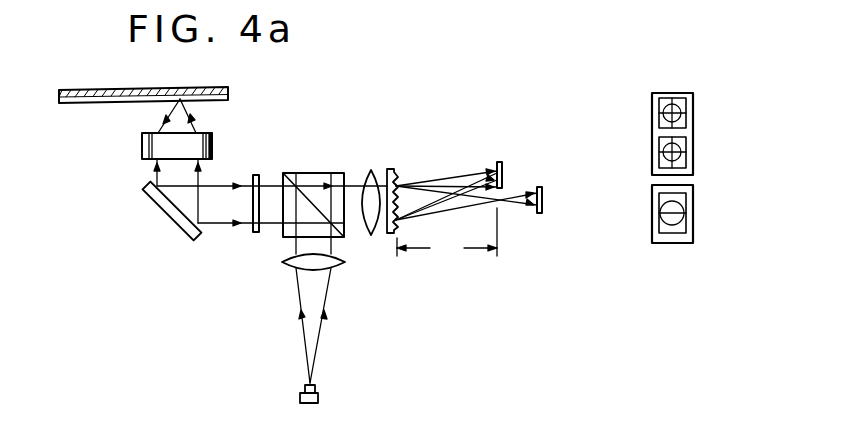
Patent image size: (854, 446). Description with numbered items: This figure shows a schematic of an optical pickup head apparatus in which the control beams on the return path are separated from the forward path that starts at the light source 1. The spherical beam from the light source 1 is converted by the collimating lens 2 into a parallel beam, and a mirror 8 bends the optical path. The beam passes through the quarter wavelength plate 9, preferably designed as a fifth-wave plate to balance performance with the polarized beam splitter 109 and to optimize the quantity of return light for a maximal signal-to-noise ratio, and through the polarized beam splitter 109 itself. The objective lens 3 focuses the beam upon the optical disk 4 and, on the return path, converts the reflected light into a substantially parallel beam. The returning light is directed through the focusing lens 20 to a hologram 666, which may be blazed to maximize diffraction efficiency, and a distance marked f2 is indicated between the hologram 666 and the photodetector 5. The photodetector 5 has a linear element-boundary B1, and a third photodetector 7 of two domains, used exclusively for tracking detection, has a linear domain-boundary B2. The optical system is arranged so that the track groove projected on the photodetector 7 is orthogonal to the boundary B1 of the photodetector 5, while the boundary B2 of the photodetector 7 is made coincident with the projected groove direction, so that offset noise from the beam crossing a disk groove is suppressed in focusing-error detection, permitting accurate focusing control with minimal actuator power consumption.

The light source 1 is at (318, 398).
The collimating lens 2 is at (335, 272).
The objective lens 3 is at (142, 148).
The optical storage medium 4 is at (218, 89).
The photodetector 5 is at (503, 165).
The third photodetector 7 is at (543, 199).
The mirror 8 is at (163, 209).
The quarter wavelength plate 9 is at (255, 233).
The focusing lens 20 is at (368, 170).
The polarized beam splitter 109 is at (316, 173).
The hologram 666 is at (393, 169).
The focal length of lens 20 f2 is at (447, 235).
The linear element-boundary B1 is at (665, 101).
The linear domain-boundary B2 is at (683, 207).